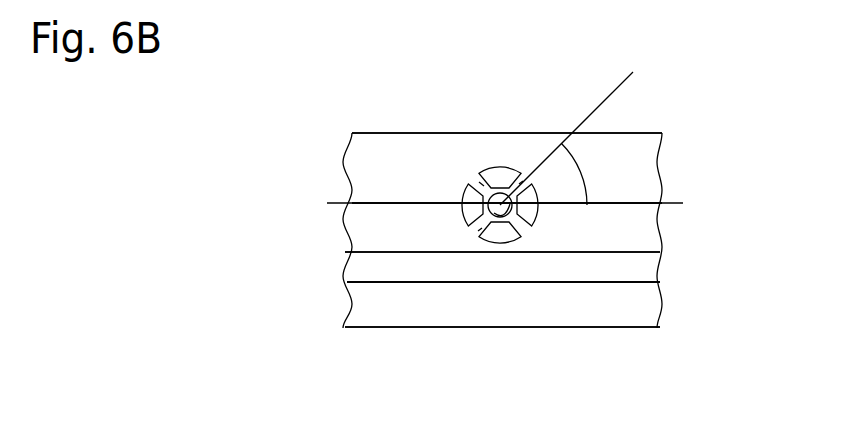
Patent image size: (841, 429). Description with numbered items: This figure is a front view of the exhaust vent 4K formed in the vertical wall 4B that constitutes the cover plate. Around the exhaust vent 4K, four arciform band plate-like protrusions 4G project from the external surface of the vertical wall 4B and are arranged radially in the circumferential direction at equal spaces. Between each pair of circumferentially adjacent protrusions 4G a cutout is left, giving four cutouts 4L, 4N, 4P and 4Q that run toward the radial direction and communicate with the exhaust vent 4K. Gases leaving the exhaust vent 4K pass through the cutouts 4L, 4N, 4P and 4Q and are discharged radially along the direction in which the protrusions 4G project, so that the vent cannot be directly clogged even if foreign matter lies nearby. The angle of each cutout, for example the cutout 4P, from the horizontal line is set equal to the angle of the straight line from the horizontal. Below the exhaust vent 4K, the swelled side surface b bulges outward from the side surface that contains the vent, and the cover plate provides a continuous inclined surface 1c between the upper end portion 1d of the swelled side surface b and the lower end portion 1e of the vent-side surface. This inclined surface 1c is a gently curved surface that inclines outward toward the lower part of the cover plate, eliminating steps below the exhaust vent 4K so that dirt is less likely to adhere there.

The vertical wall 4B is at (639, 178).
The lower end portion of side surface 1e is at (637, 249).
The inclined surface 1c is at (640, 266).
The swelled side surface b is at (647, 311).
The upper end portion of swelled side surface 1d is at (622, 284).
The arciform band plate-like protrusion 4G is at (500, 182).
The exhaust vent 4K is at (500, 218).
The cutout 4Q is at (508, 214).
The cutout 4L is at (484, 186).
The cutout 4P is at (519, 184).
The cutout 4N is at (478, 231).